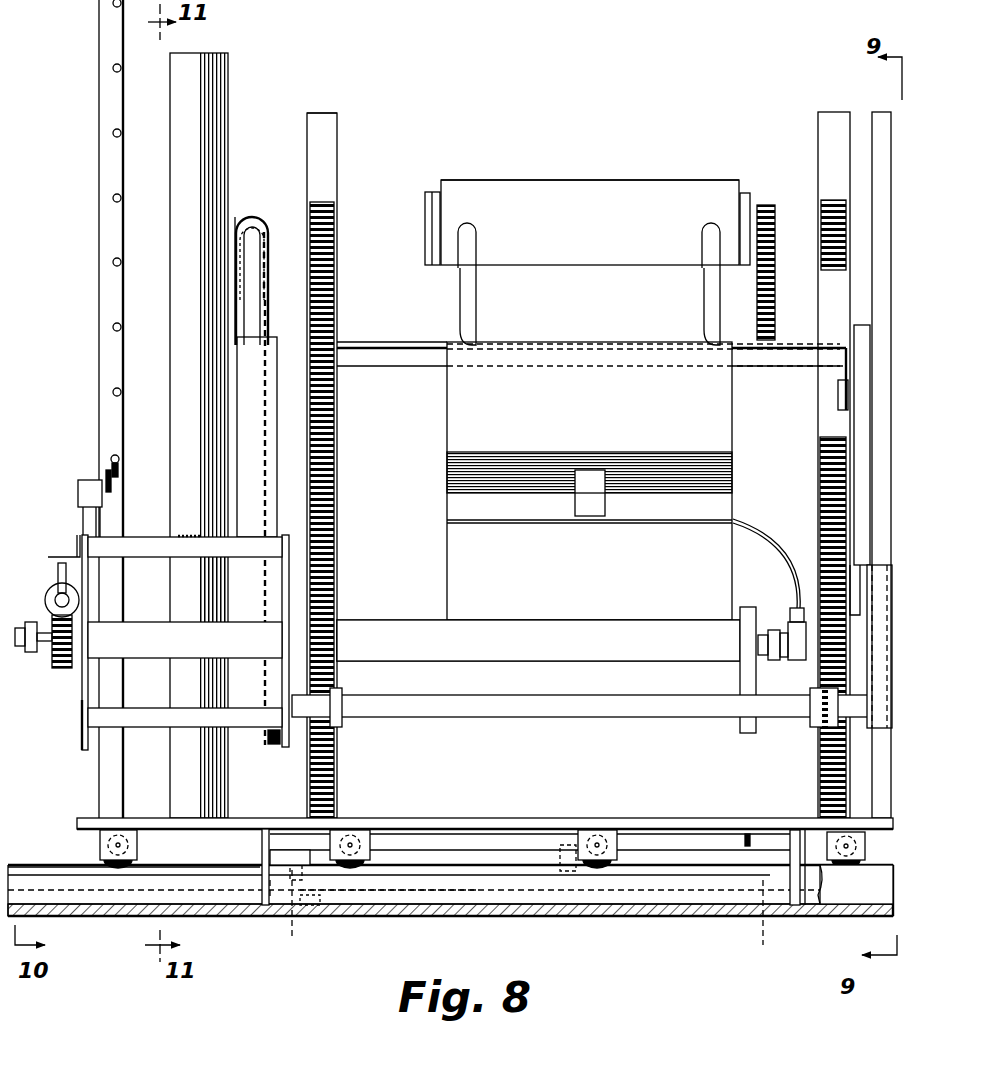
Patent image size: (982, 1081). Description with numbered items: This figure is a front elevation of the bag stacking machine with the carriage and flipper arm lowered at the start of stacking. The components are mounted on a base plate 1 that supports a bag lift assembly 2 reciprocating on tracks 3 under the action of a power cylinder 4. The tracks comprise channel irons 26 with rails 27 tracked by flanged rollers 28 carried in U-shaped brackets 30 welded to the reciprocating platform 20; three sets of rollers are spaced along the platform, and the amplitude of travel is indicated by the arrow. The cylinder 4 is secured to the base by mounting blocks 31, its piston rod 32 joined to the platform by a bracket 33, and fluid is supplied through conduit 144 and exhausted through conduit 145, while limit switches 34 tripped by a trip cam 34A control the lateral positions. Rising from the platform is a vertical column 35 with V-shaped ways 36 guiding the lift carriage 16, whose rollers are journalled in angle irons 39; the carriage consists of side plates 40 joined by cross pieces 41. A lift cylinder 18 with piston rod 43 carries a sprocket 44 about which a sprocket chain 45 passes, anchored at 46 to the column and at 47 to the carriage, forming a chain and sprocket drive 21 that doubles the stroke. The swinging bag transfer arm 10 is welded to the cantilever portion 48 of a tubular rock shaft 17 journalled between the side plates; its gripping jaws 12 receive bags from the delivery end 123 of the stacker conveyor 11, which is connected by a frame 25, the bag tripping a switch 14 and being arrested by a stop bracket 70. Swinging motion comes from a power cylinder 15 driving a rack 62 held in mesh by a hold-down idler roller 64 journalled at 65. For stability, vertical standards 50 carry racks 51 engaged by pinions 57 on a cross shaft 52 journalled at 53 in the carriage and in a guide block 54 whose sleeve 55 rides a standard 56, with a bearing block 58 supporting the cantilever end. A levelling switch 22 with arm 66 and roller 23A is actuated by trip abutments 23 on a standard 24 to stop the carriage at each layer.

The base plate 1 is at (362, 918).
The bag lift assembly 2 is at (281, 78).
The tracks 3 is at (34, 862).
The power cylinder 4 is at (482, 892).
The bag transfer arm 10 is at (480, 408).
The bag stacker conveyor 11 is at (590, 197).
The bag gripping jaws 12 is at (480, 292).
The bag-actuated switch 14 is at (592, 520).
The power cylinder 15 is at (45, 600).
The lift carriage 16 is at (80, 728).
The rock shaft 17 is at (414, 599).
The lift cylinder 18 is at (250, 495).
The reciprocating platform 20 is at (470, 806).
The chain and sprocket drive 21 is at (270, 305).
The levelling switch 22 is at (78, 492).
The trip abutments 23 is at (113, 332).
The roller 23A is at (120, 464).
The standard 24 is at (118, 232).
The frame 25 is at (392, 362).
The channel irons 26 is at (58, 908).
The rail 27 is at (60, 870).
The flanged roller 28 is at (114, 864).
The U-shaped brackets 30 is at (137, 843).
The mounting blocks 31 is at (527, 919).
The piston rod 32 is at (270, 900).
The bracket 33 is at (262, 850).
The limit switches 34 is at (322, 848).
The trip cam 34A is at (796, 830).
The vertical column 35 is at (220, 50).
The V-shaped ways 36 is at (218, 163).
The angle irons 39 is at (188, 610).
The side plates 40 is at (80, 690).
The cross pieces 41 is at (150, 728).
The piston rod 43 is at (262, 345).
The sprocket 44 is at (253, 221).
The sprocket chain 45 is at (266, 252).
The chain anchor 46 is at (230, 340).
The chain anchor 47 is at (270, 743).
The cantilever portion 48 is at (538, 640).
The vertical standards 50 is at (338, 118).
The rack 51 is at (335, 239).
The cross shaft 52 is at (473, 718).
The journal 53 is at (294, 730).
The guide block 54 is at (880, 730).
The sleeve 55 is at (880, 565).
The standard 56 is at (875, 300).
The pinions 57 is at (342, 700).
The bearing block 58 is at (740, 683).
The rack 62 is at (70, 600).
The hold-down idler roller 64 is at (58, 568).
The journal 65 is at (67, 577).
The arm 66 is at (112, 480).
The stop bracket 70 is at (576, 452).
The delivery end 123 is at (560, 178).
The conduit 144 is at (316, 893).
The conduit 145 is at (745, 838).